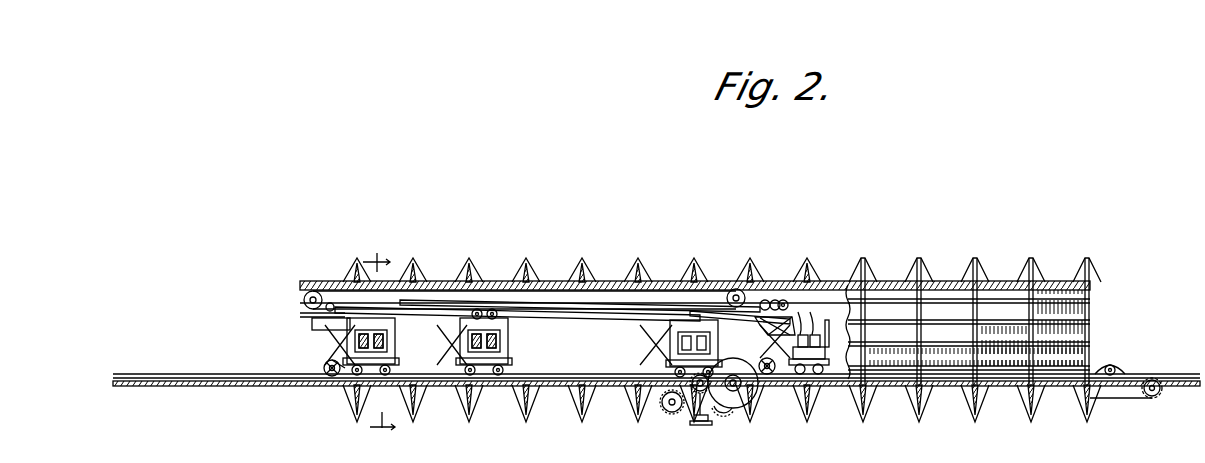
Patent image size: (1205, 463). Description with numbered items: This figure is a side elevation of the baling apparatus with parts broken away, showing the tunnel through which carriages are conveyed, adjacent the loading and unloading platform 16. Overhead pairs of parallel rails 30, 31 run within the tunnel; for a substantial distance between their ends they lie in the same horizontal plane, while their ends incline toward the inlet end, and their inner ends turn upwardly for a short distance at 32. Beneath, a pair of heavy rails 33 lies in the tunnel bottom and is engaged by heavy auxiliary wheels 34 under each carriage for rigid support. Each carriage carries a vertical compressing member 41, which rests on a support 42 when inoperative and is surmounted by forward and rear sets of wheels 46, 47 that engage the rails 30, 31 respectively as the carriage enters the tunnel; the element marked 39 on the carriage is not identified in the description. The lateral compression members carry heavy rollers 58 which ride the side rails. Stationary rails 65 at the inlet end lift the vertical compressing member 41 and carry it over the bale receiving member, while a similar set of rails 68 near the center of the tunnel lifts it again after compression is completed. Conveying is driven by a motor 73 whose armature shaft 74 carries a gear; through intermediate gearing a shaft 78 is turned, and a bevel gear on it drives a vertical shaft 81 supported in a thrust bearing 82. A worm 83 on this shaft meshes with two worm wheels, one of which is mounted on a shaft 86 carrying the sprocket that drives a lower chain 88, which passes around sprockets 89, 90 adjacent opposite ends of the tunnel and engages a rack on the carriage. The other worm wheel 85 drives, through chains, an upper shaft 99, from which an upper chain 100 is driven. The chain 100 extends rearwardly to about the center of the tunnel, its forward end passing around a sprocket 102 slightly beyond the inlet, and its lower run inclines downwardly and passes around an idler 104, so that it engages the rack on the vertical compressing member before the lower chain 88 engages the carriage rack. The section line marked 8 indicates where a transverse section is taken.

The section line 8- 8 is at (379, 343).
The loading and unloading platform 16 is at (324, 372).
The overhead rails 30 is at (450, 303).
The overhead rails 31 is at (620, 310).
The upwardly inclined inner ends 32 is at (710, 309).
The heavy rails 33 is at (656, 414).
The auxiliary wheels 34 is at (395, 365).
The carriage body 39 is at (395, 326).
The vertical compressing member 41 is at (790, 316).
The support 42 is at (322, 350).
The forward wheels 46 is at (493, 309).
The rear wheels 47 is at (477, 309).
The heavy rollers 58 is at (385, 343).
The stationary rails 65 is at (315, 332).
The rails 68 is at (762, 300).
The motor 73 is at (756, 360).
The armature shaft 74 is at (733, 383).
The shaft 78 is at (692, 380).
The vertical shaft 81 is at (697, 421).
The thrust bearing 82 is at (722, 427).
The worm 83 is at (731, 389).
The worm wheel 85 is at (740, 416).
The shaft 86 is at (670, 399).
The lower chain 88 is at (893, 398).
The sprocket 89 is at (345, 404).
The sprocket 90 is at (1153, 400).
The shaft 99 is at (735, 288).
The upper chain 100 is at (556, 286).
The sprocket 102 is at (316, 290).
The idler 104 is at (300, 313).